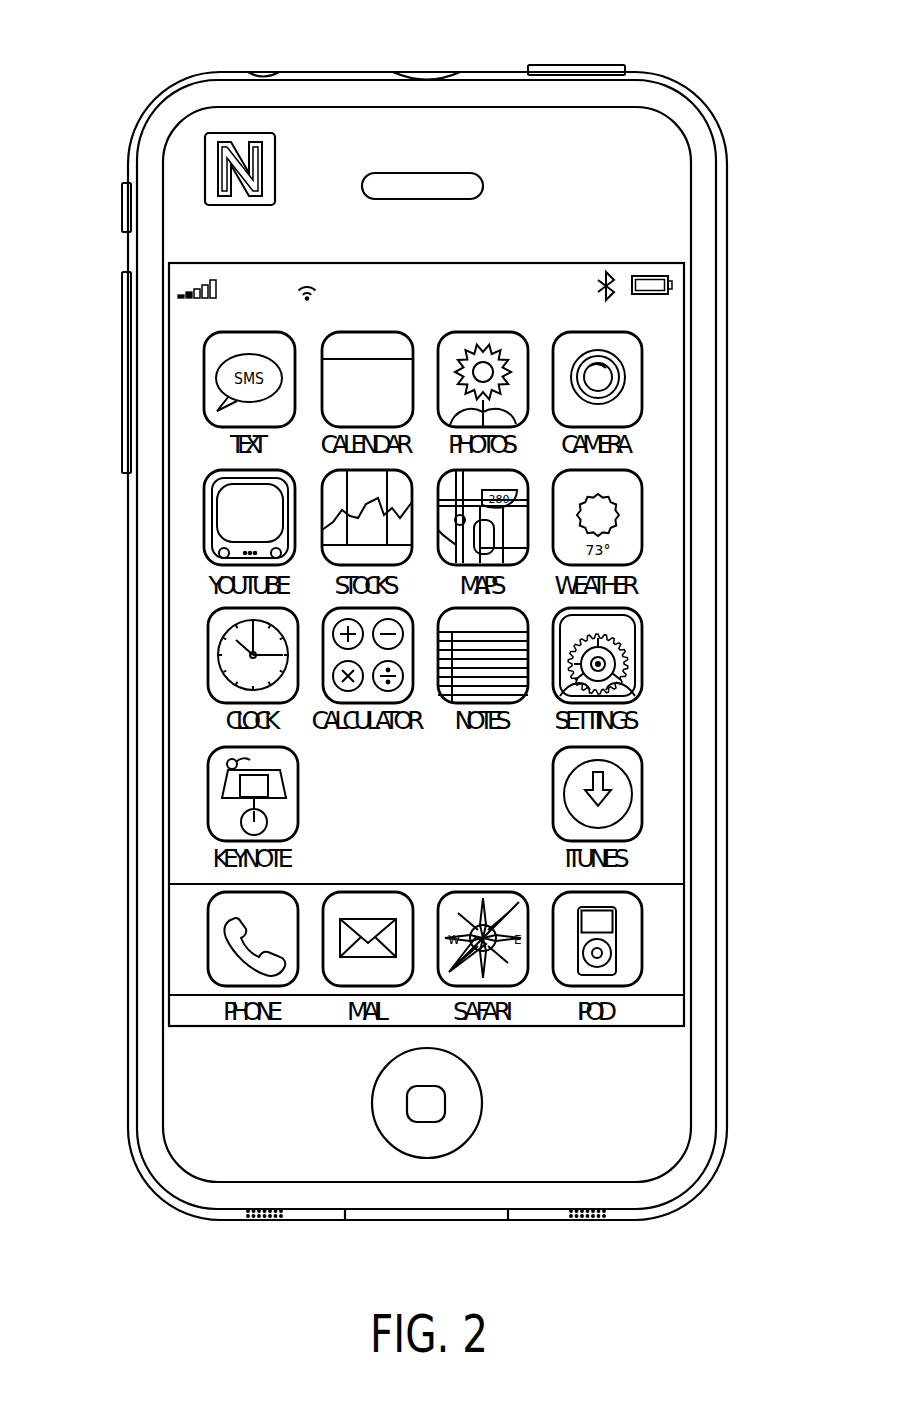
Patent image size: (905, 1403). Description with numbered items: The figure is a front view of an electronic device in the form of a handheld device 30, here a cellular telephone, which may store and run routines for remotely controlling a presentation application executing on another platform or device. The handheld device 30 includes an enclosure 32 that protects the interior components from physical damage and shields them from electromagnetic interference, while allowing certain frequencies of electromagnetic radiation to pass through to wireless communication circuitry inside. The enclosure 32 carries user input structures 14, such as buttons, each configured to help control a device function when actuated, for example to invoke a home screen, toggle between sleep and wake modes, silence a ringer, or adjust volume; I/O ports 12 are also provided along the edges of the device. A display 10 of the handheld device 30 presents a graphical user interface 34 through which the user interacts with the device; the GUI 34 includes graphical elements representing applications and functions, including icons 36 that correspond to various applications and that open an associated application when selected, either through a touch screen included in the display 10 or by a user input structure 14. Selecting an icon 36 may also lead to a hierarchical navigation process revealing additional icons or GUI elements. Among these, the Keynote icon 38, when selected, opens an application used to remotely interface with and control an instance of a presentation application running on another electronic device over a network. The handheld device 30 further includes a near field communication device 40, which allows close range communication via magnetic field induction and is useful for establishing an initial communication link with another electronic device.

The handheld device 30 is at (158, 48).
The enclosure 32 is at (727, 262).
The display 10 is at (686, 518).
The I/O ports 12 is at (266, 72).
The input structures 14 is at (577, 65).
The near field communication (NFC) device 40 is at (205, 156).
The graphical user interface (GUI) 34 is at (189, 615).
The icons 36 is at (368, 332).
The Keynote icon 38 is at (298, 800).